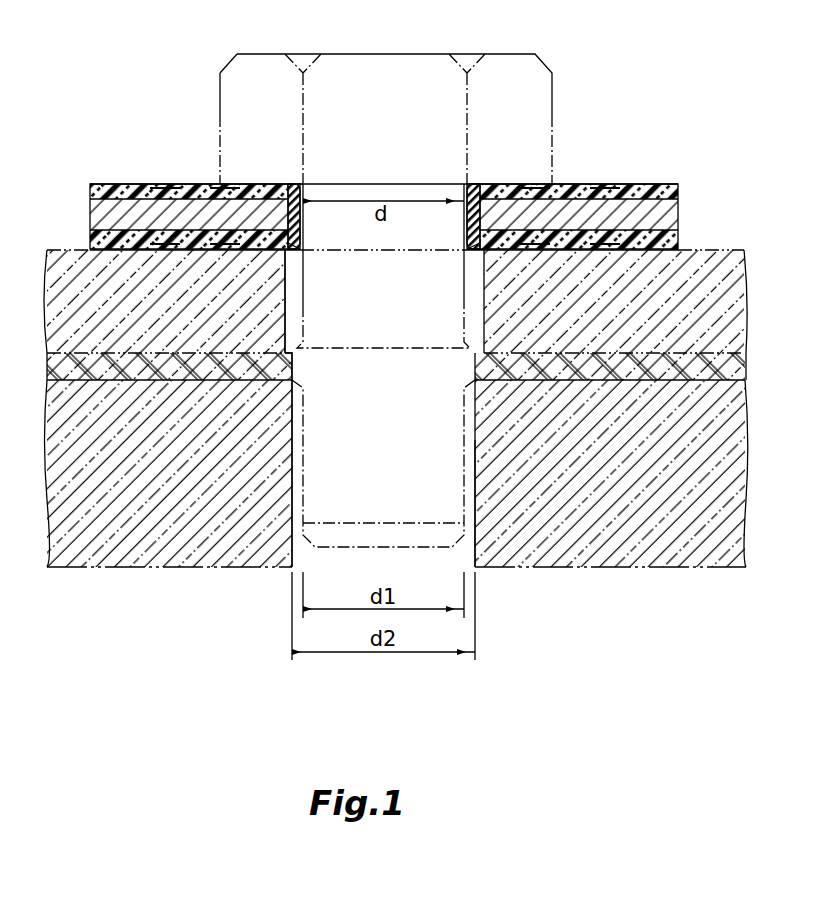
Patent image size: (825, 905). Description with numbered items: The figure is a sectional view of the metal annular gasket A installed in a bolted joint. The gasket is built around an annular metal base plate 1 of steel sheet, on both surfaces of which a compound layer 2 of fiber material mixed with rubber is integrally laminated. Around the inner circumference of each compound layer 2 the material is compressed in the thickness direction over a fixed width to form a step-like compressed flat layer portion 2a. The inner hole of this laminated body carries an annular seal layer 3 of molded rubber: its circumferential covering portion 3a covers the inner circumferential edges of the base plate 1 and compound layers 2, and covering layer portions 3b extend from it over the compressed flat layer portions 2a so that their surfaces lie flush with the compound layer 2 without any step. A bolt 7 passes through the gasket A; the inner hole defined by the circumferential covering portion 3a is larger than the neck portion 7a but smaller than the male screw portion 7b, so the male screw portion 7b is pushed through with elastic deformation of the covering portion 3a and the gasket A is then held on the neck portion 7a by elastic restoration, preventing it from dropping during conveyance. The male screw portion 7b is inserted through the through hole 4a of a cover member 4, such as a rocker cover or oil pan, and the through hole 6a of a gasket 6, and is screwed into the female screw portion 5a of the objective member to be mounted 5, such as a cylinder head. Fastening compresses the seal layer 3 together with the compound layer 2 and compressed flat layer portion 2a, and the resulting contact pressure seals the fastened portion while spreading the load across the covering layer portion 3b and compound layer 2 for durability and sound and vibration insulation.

The annular metal base plate 1 is at (90, 214).
The compound layer 2 is at (160, 185).
The compressed flat layer portion 2a is at (249, 185).
The annular seal layer 3 is at (290, 178).
The circumferential covering portion 3a is at (291, 246).
The covering layer portion 3b is at (490, 186).
The cover member 4 is at (729, 250).
The through hole 4a is at (286, 319).
The objective member to be mounted 5 is at (635, 568).
The female screw portion 5a is at (305, 441).
The gasket 6 is at (738, 378).
The through hole 6a is at (292, 370).
The bolt 7 is at (552, 95).
The neck portion 7a is at (311, 185).
The male screw portion 7b is at (478, 440).
The metal annular gasket A is at (698, 164).